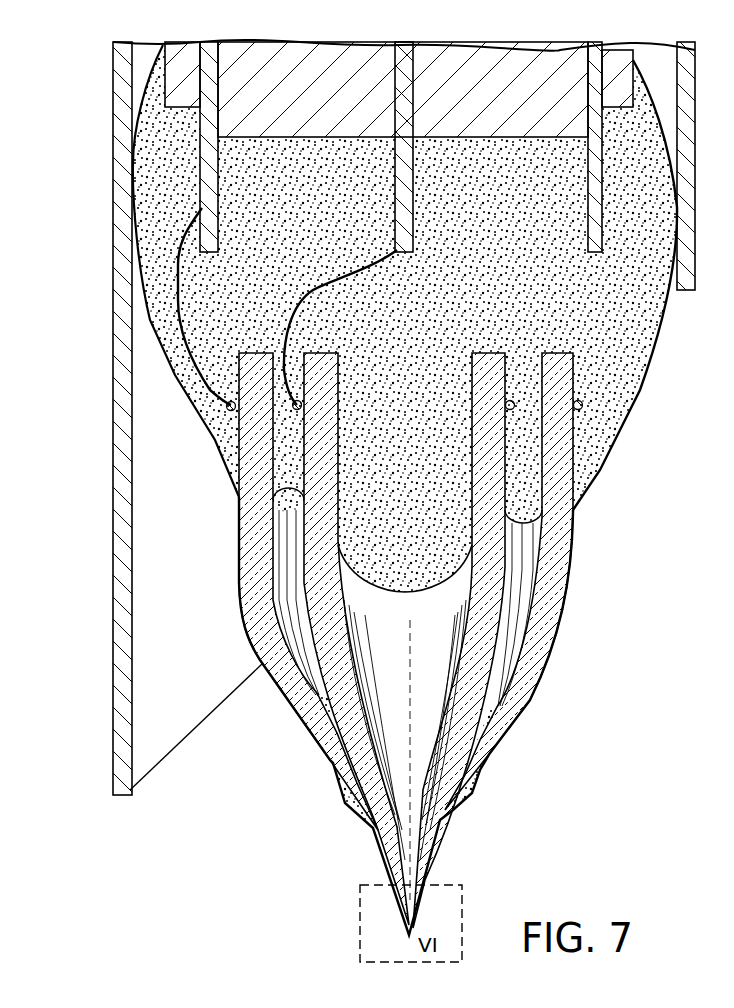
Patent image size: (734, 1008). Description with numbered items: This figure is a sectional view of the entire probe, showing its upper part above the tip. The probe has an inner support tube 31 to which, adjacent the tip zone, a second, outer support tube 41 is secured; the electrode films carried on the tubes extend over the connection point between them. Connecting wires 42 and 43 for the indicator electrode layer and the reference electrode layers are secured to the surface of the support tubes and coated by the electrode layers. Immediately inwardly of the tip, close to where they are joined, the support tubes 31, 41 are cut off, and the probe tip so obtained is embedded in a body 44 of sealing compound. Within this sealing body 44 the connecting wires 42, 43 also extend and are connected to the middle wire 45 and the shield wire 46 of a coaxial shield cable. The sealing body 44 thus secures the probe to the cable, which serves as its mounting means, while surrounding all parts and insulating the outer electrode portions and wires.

The inner support tube 31 is at (490, 672).
The outer support tube 41 is at (567, 580).
The connecting wire 42 is at (293, 408).
The connecting wire 43 is at (226, 407).
The sealing body 44 is at (647, 323).
The middle wire 45 is at (403, 80).
The shield wire 46 is at (203, 157).